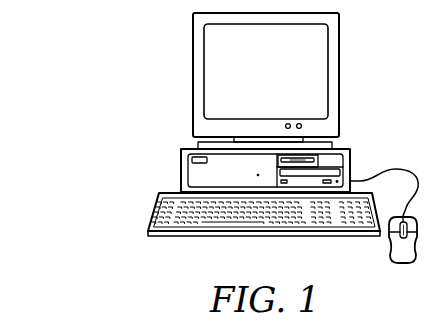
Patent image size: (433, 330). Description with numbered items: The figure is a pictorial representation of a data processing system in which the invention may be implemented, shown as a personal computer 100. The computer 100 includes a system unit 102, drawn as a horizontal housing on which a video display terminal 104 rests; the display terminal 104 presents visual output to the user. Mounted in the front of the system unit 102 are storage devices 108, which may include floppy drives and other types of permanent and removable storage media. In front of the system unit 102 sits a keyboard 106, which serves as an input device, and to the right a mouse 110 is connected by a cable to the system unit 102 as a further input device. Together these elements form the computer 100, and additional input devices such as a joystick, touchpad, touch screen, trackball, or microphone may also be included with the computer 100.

The computer 100 is at (128, 61).
The system unit 102 is at (181, 164).
The video display terminal 104 is at (339, 76).
The keyboard 106 is at (175, 237).
The storage devices 108 is at (318, 162).
The mouse 110 is at (403, 263).